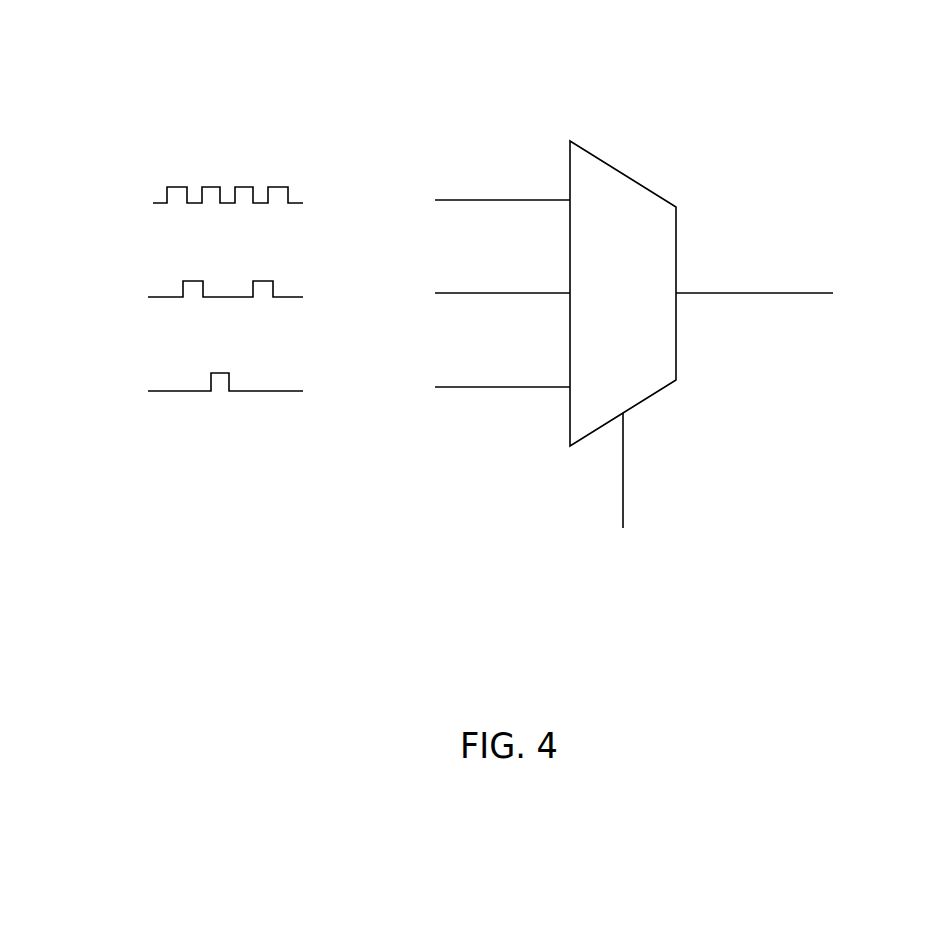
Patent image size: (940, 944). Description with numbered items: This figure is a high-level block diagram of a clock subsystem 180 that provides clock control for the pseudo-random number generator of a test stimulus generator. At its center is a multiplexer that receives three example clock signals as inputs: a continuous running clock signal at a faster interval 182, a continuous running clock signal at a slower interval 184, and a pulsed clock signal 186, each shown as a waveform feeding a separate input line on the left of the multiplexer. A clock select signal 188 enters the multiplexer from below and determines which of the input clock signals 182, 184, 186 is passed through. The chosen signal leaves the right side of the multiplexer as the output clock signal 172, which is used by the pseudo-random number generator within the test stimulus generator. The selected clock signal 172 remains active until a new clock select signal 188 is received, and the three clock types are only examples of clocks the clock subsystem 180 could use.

The clock subsystem 180 is at (233, 82).
The fast clock signal 182 is at (299, 176).
The slow clock signal 184 is at (288, 282).
The pulsed clock signal 186 is at (290, 376).
The output clock signal 172 is at (865, 277).
The clock select signal 188 is at (626, 627).